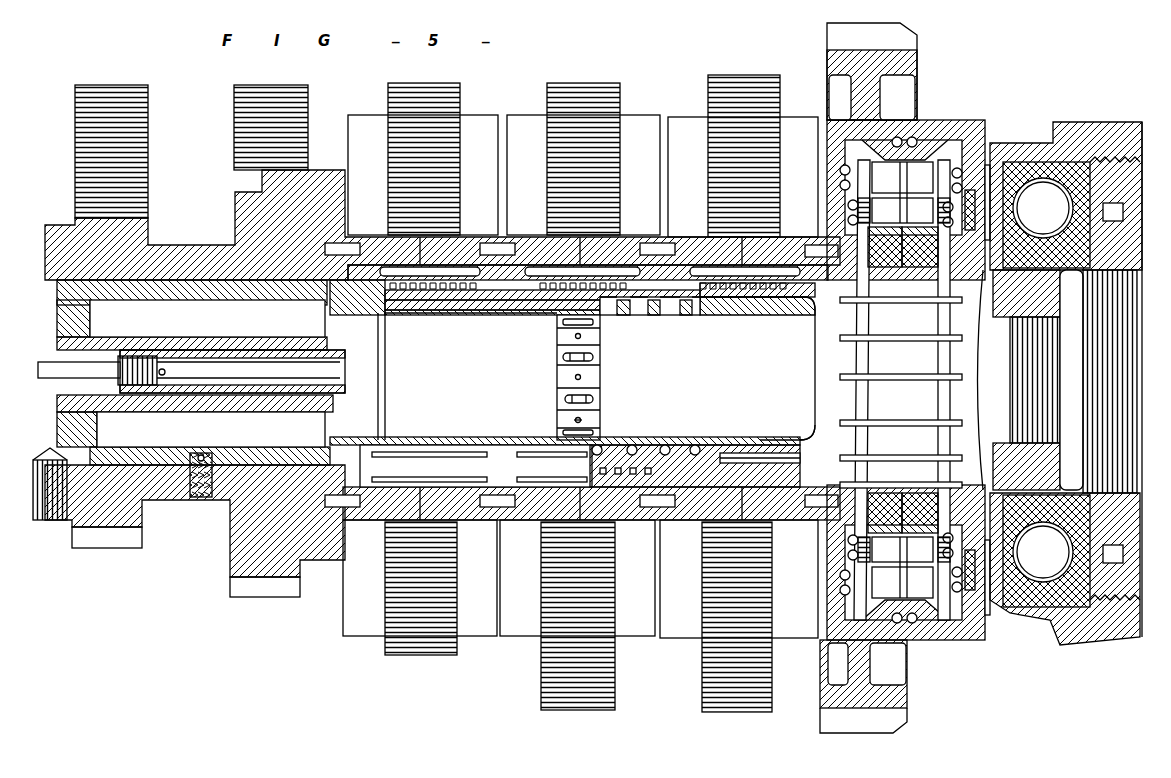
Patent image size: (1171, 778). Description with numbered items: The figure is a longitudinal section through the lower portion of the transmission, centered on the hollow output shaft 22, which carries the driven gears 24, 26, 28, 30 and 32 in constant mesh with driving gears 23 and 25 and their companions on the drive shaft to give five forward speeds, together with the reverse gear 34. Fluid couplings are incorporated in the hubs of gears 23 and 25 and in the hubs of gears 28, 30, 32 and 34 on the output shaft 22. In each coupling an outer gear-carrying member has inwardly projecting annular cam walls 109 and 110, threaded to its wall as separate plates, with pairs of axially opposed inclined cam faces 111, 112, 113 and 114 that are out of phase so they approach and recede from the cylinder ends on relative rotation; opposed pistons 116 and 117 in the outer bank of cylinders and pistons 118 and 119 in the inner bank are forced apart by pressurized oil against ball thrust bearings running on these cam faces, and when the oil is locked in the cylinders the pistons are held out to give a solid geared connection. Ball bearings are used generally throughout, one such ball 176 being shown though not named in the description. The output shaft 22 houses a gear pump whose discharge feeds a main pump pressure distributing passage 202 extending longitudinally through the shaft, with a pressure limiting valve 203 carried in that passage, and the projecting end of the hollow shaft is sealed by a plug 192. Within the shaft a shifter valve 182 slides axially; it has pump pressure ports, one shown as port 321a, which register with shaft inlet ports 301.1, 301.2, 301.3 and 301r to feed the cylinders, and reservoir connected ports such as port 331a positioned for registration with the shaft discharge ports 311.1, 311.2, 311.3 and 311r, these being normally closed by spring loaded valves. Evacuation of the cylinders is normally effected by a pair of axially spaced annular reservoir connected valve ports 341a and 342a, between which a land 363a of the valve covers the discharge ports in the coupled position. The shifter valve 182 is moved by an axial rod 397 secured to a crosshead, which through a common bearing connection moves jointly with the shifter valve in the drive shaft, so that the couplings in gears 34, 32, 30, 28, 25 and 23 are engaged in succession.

The output shaft 22 is at (65, 218).
The driving gear 23 is at (78, 123).
The driven gear 24 is at (93, 548).
The driving gear 25 is at (236, 120).
The driven gear 26 is at (253, 597).
The driven gear 28 is at (415, 655).
The driven gear 30 is at (563, 710).
The driven gear 32 is at (720, 712).
The reverse gear 34 is at (896, 723).
The annular cam wall 109 is at (828, 622).
The annular cam wall 110 is at (982, 615).
The cam face 111 is at (840, 178).
The cam face 112 is at (988, 165).
The cam face 113 is at (850, 222).
The cam face 114 is at (1012, 378).
The piston 116 is at (915, 140).
The piston 117 is at (962, 140).
The piston 118 is at (887, 530).
The piston 119 is at (920, 530).
The ball 176 is at (1060, 216).
The shifter valve 182 is at (605, 362).
The plug 192 is at (1012, 356).
The main pump pressure fluid distributing passage 202 is at (152, 305).
The pressure limiting valve 203 is at (205, 452).
The inlet port 301.1 is at (692, 444).
The inlet port 301.2 is at (665, 444).
The inlet port 301.3 is at (632, 445).
The inlet port 301r is at (702, 448).
The discharge port 311.1 is at (686, 315).
The discharge port 311.2 is at (665, 316).
The discharge port 311.3 is at (624, 315).
The discharge port 311r is at (657, 315).
The pump pressure port 321a is at (604, 394).
The reservoir connected port 331a is at (606, 420).
The annular reservoir connected valve port 341a is at (500, 438).
The annular reservoir connected valve port 342a is at (786, 446).
The land 363a is at (558, 372).
The axial rod 397 is at (102, 374).